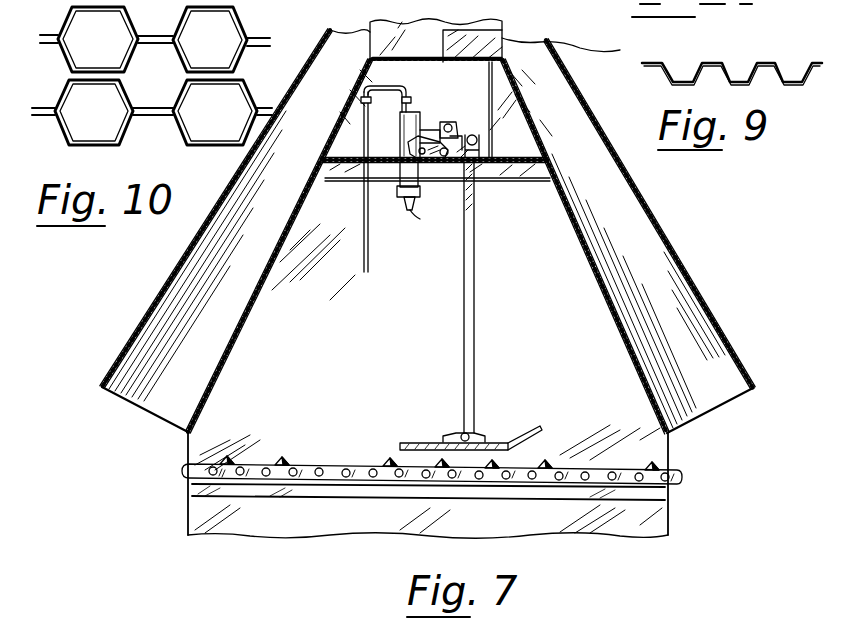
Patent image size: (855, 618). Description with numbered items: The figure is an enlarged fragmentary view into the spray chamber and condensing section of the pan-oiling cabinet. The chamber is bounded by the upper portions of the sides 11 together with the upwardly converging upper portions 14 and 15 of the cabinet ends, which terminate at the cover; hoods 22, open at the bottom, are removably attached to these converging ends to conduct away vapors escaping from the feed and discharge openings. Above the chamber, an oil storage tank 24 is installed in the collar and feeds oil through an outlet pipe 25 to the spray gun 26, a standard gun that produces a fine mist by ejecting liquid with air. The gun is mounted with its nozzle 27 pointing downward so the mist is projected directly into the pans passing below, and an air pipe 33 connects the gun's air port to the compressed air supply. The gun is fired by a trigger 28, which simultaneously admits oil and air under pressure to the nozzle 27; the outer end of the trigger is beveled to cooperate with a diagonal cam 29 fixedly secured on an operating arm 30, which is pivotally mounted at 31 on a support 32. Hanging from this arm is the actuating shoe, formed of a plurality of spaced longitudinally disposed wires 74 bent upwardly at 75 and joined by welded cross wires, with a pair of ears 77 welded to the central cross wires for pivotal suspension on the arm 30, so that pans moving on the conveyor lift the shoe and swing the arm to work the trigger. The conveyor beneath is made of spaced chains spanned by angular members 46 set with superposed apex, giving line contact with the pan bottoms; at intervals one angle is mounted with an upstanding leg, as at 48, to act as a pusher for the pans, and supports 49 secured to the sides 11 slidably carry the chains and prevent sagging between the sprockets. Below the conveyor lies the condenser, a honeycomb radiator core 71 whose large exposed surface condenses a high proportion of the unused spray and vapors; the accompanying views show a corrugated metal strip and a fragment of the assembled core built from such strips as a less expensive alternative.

The sides 11 is at (317, 341).
The upper converging portion 14 is at (580, 227).
The upper converging portion 15 is at (284, 252).
The hood 22 is at (233, 311).
The oil storage tank 24 is at (503, 38).
The outlet pipe 25 is at (489, 82).
The spray gun 26 is at (418, 110).
The nozzle 27 is at (417, 204).
The trigger 28 is at (455, 160).
The diagonal cam 29 is at (480, 146).
The operating arm 30 is at (476, 292).
The pivot 31 is at (470, 132).
The support 32 is at (522, 166).
The air pipe 33 is at (364, 180).
The angular members 46 is at (233, 464).
The pusher angle 48 is at (344, 464).
The supports 49 is at (310, 487).
The honeycomb radiator core 71 is at (488, 529).
The wires 74 is at (536, 429).
The upward bend 75 is at (458, 432).
The ears 77 is at (461, 437).